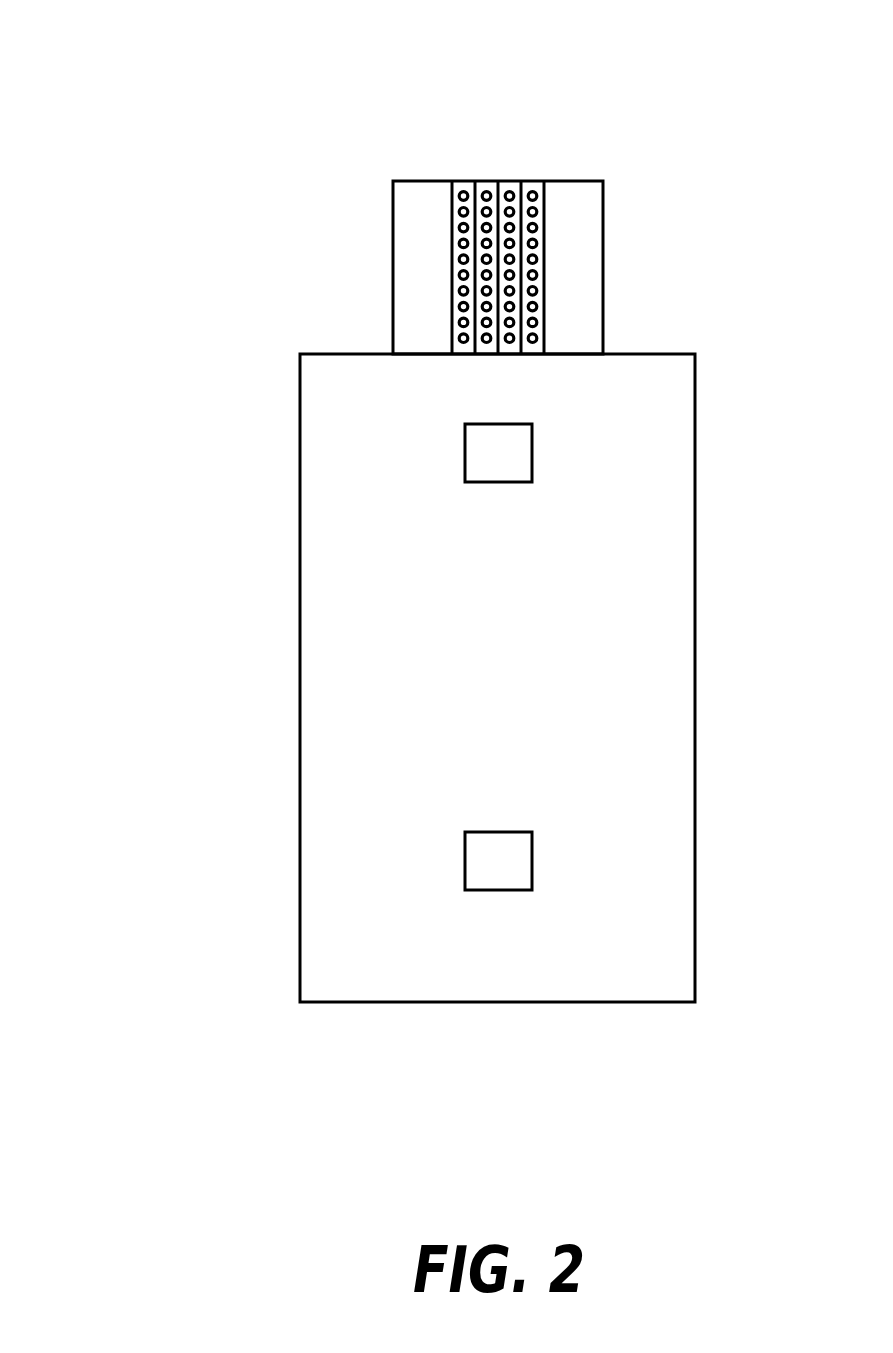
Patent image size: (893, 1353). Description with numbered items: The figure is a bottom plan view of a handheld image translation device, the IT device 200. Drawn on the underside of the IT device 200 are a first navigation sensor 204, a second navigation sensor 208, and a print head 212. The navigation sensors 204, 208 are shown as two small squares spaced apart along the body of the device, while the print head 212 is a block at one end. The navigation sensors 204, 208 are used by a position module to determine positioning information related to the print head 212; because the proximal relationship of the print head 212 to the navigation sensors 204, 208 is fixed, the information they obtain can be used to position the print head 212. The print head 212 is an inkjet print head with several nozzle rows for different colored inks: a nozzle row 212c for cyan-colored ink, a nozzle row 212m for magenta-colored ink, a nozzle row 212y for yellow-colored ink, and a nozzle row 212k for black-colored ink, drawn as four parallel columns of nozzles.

The IT device 200 is at (159, 113).
The first navigation sensor 204 is at (465, 455).
The second navigation sensor 208 is at (465, 862).
The print head 212 is at (603, 238).
The nozzle row for cyan-colored ink 212c is at (448, 179).
The nozzle row for magenta-colored ink 212m is at (487, 179).
The nozzle row for yellow-colored ink 212y is at (510, 179).
The nozzle row for black-colored ink 212k is at (548, 179).